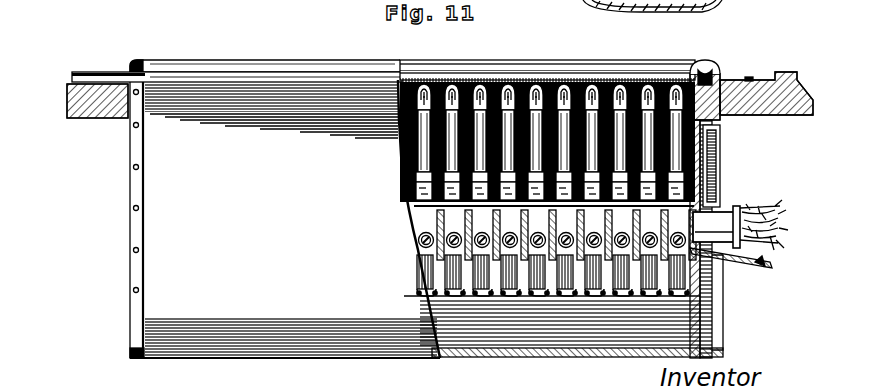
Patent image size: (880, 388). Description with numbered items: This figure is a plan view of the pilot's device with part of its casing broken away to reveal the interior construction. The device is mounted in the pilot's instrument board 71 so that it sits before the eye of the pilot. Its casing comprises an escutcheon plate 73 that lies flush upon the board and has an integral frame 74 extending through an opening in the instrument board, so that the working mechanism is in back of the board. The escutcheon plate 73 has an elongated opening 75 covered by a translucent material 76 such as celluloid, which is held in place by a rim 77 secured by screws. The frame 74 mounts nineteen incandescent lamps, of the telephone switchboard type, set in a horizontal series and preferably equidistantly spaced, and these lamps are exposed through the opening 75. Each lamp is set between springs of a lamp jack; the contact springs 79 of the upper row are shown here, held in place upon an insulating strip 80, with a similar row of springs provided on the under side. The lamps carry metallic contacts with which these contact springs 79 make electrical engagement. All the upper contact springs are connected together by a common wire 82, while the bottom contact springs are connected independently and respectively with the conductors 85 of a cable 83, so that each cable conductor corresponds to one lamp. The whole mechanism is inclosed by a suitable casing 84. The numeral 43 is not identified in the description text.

The casing 43 is at (223, 11).
The pilot's instrument board 71 is at (116, 118).
The escutcheon plate 73 is at (280, 72).
The frame 74 is at (733, 166).
The elongated opening 75 is at (685, 64).
The translucent material 76 is at (428, 68).
The rim 77 is at (358, 64).
The contact springs 79 is at (678, 198).
The insulating strip 80 is at (498, 262).
The common wire 82 is at (612, 275).
The cable 83 is at (658, 270).
The casing 84 is at (181, 345).
The conductors 85 is at (754, 233).